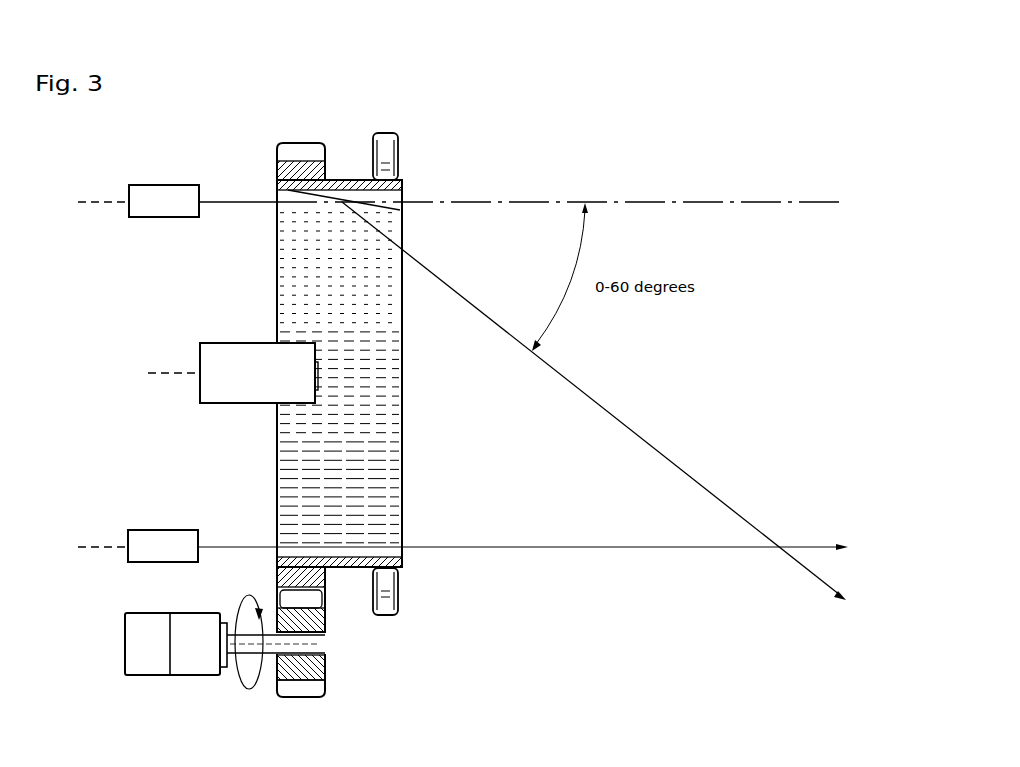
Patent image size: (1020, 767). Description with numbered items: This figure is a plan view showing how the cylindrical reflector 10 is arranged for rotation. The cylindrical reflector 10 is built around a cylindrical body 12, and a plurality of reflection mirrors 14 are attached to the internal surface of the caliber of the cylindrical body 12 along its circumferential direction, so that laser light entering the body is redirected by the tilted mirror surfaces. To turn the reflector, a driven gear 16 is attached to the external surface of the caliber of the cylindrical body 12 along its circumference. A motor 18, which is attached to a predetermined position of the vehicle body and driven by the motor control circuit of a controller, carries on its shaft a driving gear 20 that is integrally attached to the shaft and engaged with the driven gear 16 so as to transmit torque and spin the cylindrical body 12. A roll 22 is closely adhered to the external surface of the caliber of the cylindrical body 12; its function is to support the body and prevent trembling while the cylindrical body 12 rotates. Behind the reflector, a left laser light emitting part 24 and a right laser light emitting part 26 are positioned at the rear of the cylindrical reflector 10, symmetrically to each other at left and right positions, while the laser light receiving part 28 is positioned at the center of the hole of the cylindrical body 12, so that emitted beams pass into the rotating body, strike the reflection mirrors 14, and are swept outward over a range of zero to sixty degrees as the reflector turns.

The cylindrical reflector 10 is at (403, 405).
The cylindrical body 12 is at (402, 463).
The reflection mirrors 14 is at (375, 330).
The driven gear 16 is at (325, 580).
The motor 18 is at (150, 624).
The driving gear 20 is at (325, 668).
The roll 22 is at (387, 603).
The left laser light emitting part 24 is at (172, 217).
The right laser light emitting part 26 is at (167, 530).
The laser light receiving part 28 is at (242, 343).